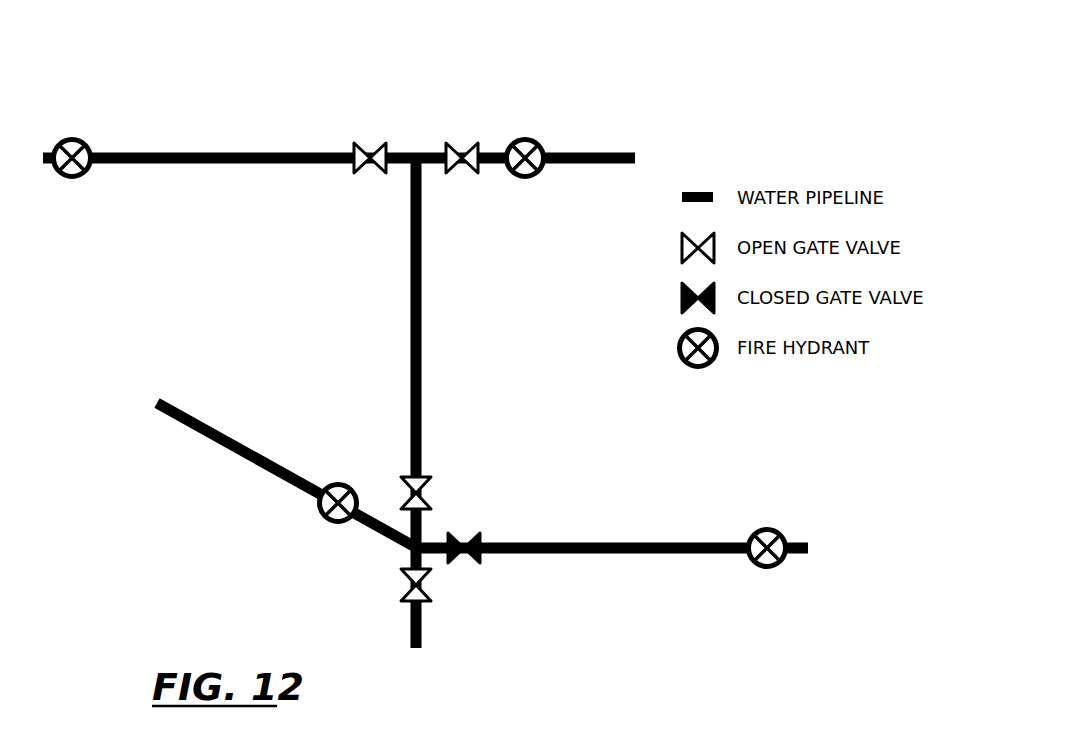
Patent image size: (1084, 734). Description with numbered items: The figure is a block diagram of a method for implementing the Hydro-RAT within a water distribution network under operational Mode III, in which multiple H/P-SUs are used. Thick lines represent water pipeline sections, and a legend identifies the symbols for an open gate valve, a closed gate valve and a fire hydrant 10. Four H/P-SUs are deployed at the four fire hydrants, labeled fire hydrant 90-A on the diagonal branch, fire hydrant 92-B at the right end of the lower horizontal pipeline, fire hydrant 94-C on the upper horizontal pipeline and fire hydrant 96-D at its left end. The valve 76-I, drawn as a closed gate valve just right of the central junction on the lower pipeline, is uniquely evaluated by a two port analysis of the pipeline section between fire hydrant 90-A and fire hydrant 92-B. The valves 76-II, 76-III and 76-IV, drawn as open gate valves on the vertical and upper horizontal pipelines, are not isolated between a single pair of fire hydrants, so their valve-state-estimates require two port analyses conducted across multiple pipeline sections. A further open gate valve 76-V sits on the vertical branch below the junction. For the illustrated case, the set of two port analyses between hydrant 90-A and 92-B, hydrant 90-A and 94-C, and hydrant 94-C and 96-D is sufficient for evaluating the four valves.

The fire hydrant 10 is at (454, 350).
The valve 76-I is at (466, 524).
The valve 76-II is at (393, 458).
The valve 76-III is at (463, 129).
The valve 76-IV is at (364, 130).
The valve 76-V is at (438, 596).
The fire hydrant A 90 is at (326, 537).
The fire hydrant B 92 is at (753, 582).
The fire hydrant C 94 is at (542, 194).
The fire hydrant D 96 is at (88, 194).